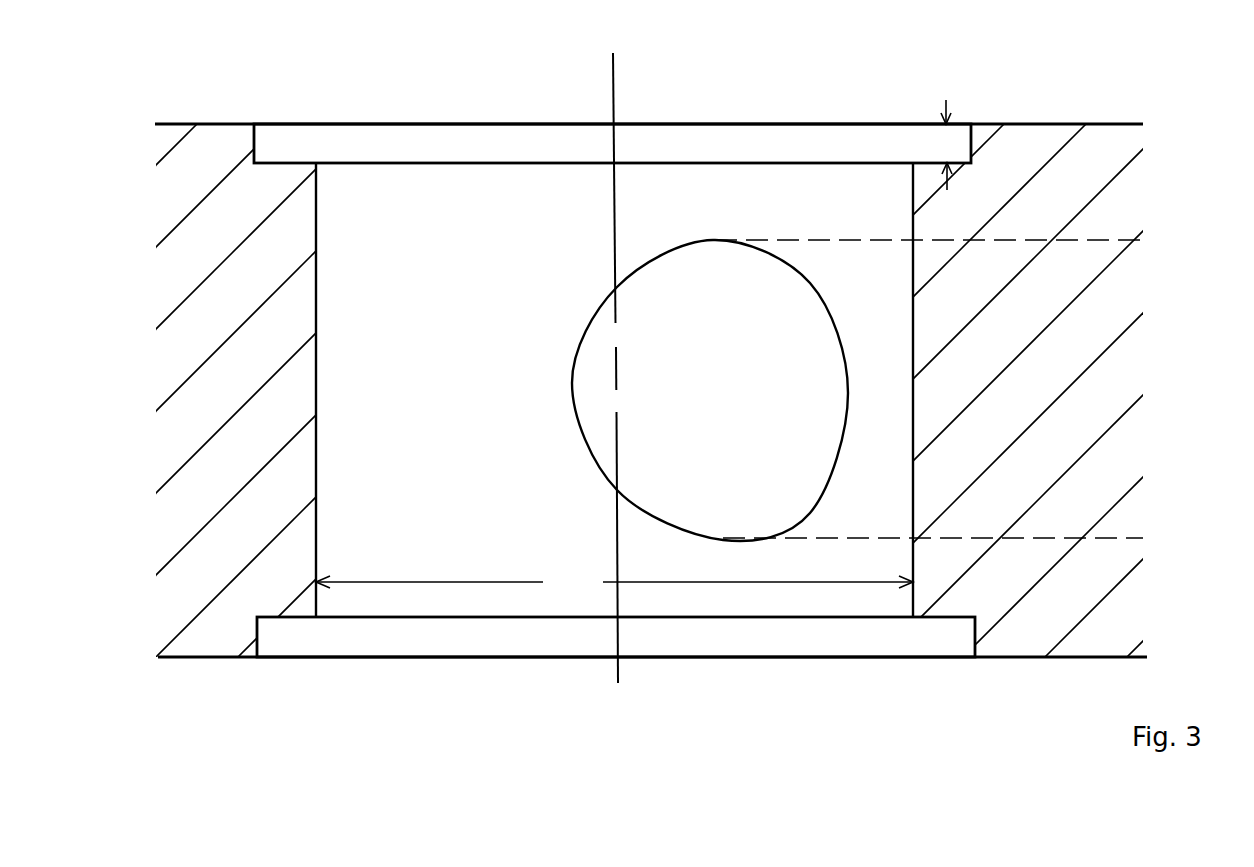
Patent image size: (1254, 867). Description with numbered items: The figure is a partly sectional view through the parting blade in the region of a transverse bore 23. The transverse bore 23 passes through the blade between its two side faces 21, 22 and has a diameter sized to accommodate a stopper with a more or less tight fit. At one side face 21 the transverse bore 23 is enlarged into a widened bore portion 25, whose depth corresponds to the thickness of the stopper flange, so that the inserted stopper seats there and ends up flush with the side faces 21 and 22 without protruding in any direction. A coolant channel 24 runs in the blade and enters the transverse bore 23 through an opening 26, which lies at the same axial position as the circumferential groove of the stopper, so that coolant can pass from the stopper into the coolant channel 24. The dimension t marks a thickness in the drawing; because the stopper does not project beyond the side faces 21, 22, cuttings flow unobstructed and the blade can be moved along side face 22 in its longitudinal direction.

The side face 21 is at (1017, 660).
The side face 22 is at (1041, 122).
The transverse bore 23 is at (453, 217).
The coolant channel 24 is at (885, 278).
The widened bore portion 25 is at (273, 145).
The opening of the coolant channel 26 is at (748, 338).
The thickness t is at (945, 145).